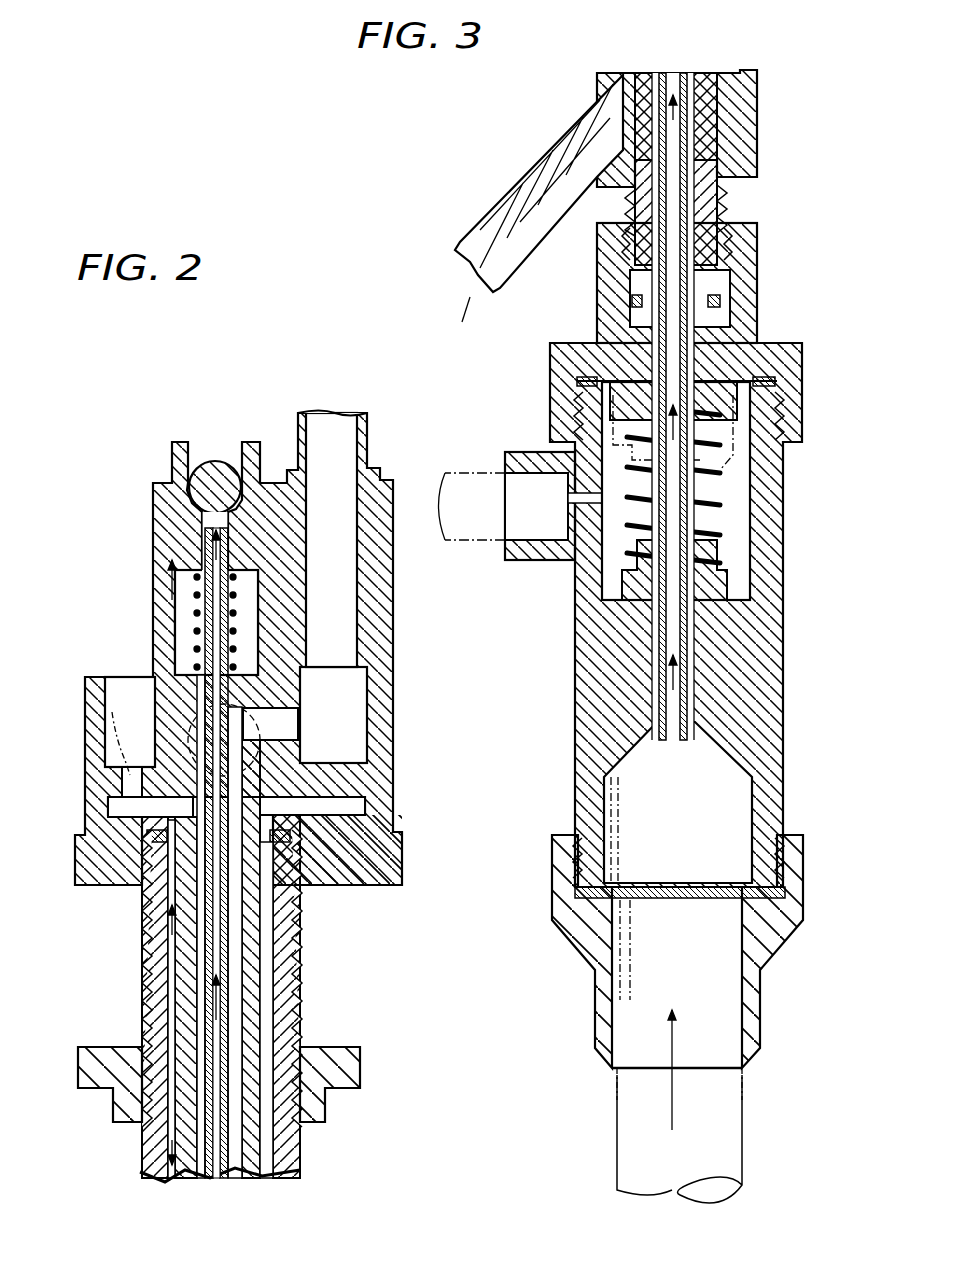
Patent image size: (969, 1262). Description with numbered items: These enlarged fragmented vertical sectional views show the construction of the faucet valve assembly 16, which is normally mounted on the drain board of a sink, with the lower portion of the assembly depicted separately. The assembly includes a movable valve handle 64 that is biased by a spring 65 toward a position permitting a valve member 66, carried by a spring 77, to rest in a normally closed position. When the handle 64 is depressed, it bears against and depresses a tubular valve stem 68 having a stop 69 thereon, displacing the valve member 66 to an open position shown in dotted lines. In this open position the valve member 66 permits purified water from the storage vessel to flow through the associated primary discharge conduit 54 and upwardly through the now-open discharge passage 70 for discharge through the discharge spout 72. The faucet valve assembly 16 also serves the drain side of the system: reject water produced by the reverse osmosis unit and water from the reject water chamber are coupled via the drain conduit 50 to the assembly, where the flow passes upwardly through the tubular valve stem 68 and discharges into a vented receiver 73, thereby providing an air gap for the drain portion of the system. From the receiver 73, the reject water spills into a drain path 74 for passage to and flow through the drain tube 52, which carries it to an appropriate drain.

In FIG. 2, the faucet valve assembly 16 is at (142, 455).
In FIG. 3, the drain conduit 50 is at (742, 1152).
In FIG. 3, the drain tube 52 is at (550, 148).
In FIG. 3, the primary discharge conduit 54 is at (455, 470).
In FIG. 2, the valve handle 64 is at (215, 480).
In FIG. 2, the spring 65 is at (195, 588).
In FIG. 3, the valve member 66 is at (705, 378).
In FIG. 2, the tubular valve stem 68 is at (197, 640).
In FIG. 3, the tubular valve stem 68 is at (690, 740).
In FIG. 3, the stop 69 is at (700, 376).
In FIG. 2, the discharge passage 70 is at (238, 960).
In FIG. 3, the discharge passage 70 is at (693, 177).
In FIG. 2, the discharge spout 72 is at (371, 430).
In FIG. 2, the vented receiver 73 is at (128, 716).
In FIG. 2, the drain path 74 is at (172, 935).
In FIG. 3, the drain path 74 is at (626, 80).
In FIG. 3, the spring 77 is at (718, 515).